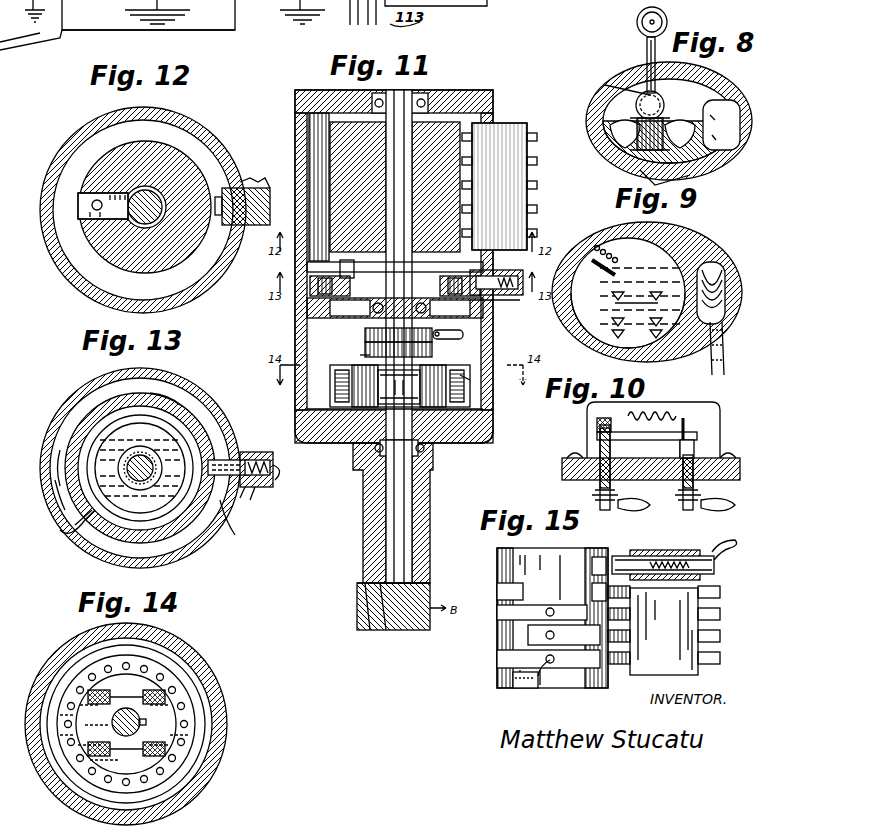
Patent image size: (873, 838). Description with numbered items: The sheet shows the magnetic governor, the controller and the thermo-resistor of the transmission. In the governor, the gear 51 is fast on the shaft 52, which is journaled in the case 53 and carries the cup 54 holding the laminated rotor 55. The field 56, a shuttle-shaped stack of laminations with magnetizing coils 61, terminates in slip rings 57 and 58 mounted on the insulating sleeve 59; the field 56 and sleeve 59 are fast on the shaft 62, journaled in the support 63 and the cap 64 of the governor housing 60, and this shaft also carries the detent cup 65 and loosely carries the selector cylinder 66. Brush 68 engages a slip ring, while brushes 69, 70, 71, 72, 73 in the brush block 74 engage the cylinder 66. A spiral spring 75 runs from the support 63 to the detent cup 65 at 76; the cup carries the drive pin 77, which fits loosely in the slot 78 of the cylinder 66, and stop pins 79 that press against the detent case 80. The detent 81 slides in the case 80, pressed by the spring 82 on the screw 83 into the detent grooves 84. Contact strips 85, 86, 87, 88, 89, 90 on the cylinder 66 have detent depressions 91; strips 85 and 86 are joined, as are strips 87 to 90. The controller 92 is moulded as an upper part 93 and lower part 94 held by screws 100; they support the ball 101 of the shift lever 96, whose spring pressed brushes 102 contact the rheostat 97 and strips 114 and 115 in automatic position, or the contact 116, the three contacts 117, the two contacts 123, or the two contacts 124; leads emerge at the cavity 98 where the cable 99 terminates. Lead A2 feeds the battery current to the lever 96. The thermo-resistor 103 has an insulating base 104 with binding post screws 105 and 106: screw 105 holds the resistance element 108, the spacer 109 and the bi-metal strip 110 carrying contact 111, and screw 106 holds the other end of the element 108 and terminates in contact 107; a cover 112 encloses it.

In FIG. 11, the gear 51 is at (360, 610).
In FIG. 11, the shaft 52 is at (400, 508).
In FIG. 12, the case 53 is at (75, 136).
In FIG. 13, the case 53 is at (50, 386).
In FIG. 14, the case 53 is at (222, 722).
In FIG. 11, the case 53 is at (487, 440).
In FIG. 14, the cup 54 is at (195, 683).
In FIG. 11, the cup 54 is at (490, 415).
In FIG. 14, the rotor 55 is at (172, 662).
In FIG. 11, the rotor 55 is at (480, 385).
In FIG. 14, the field 56 is at (118, 696).
In FIG. 11, the field 56 is at (350, 410).
In FIG. 11, the slip ring 57 is at (368, 334).
In FIG. 11, the slip ring 58 is at (372, 349).
In FIG. 11, the insulating sleeve 59 is at (362, 355).
In FIG. 11, the motor housing 60 is at (440, 90).
In FIG. 14, the magnetizing coils 61 is at (145, 762).
In FIG. 11, the magnetizing coils 61 is at (360, 405).
In FIG. 14, the shaft 62 is at (150, 716).
In FIG. 11, the shaft 62 is at (390, 170).
In FIG. 13, the support 63 is at (158, 455).
In FIG. 11, the support 63 is at (478, 316).
In FIG. 11, the cap 64 is at (312, 92).
In FIG. 13, the detent cup 65 is at (70, 430).
In FIG. 11, the detent cup 65 is at (312, 315).
In FIG. 12, the selector cylinder 66 is at (130, 262).
In FIG. 11, the selector cylinder 66 is at (320, 143).
In FIG. 15, the selector cylinder 66 is at (508, 566).
In FIG. 11, the brush 68 is at (460, 335).
In FIG. 15, the brush 69 is at (718, 562).
In FIG. 15, the brush 70 is at (720, 592).
In FIG. 15, the brush 71 is at (720, 614).
In FIG. 15, the brush 72 is at (720, 636).
In FIG. 15, the brush 73 is at (720, 658).
In FIG. 12, the brush block 74 is at (241, 209).
In FIG. 11, the brush block 74 is at (499, 186).
In FIG. 15, the brush block 74 is at (664, 631).
In FIG. 13, the spiral spring 75 is at (175, 410).
In FIG. 13, the spring fastening point 76 is at (80, 520).
In FIG. 12, the drive pin 77 is at (85, 210).
In FIG. 11, the drive pin 77 is at (340, 268).
In FIG. 12, the slot 78 is at (90, 200).
In FIG. 15, the slot 78 is at (520, 688).
In FIG. 13, the stop pins 79 is at (58, 495).
In FIG. 11, the stop pins 79 is at (320, 290).
In FIG. 13, the detent case 80 is at (248, 490).
In FIG. 11, the detent case 80 is at (508, 292).
In FIG. 13, the detent 81 is at (235, 460).
In FIG. 13, the spring 82 is at (261, 460).
In FIG. 13, the screw 83 is at (273, 487).
In FIG. 13, the detent grooves 84 is at (150, 393).
In FIG. 15, the contact strip 85 is at (596, 566).
In FIG. 15, the contact strip 86 is at (596, 590).
In FIG. 15, the contact strip 87 is at (505, 590).
In FIG. 15, the contact strip 88 is at (503, 613).
In FIG. 15, the contact strip 89 is at (532, 636).
In FIG. 12, the contact strip 90 is at (182, 150).
In FIG. 15, the contact strip 90 is at (503, 662).
In FIG. 15, the detent depressions 91 is at (558, 662).
In FIG. 8, the controller 92 is at (722, 80).
In FIG. 9, the controller 92 is at (715, 248).
In FIG. 8, the upper part 93 is at (625, 72).
In FIG. 8, the lower part 94 is at (590, 145).
In FIG. 9, the lower part 94 is at (700, 250).
In FIG. 8, the shift lever 96 is at (638, 25).
In FIG. 9, the rheostat 97 is at (618, 251).
In FIG. 8, the cavity 98 is at (725, 145).
In FIG. 9, the cavity 98 is at (724, 268).
In FIG. 9, the cable 99 is at (735, 355).
In FIG. 8, the screws 100 is at (615, 85).
In FIG. 8, the ball 101 is at (640, 105).
In FIG. 8, the spring pressed brushes 102 is at (690, 178).
In FIG. 10, the thermo-resistor 103 is at (653, 401).
In FIG. 10, the base 104 is at (565, 466).
In FIG. 10, the binding post screw 105 is at (598, 505).
In FIG. 10, the binding post screw 106 is at (700, 500).
In FIG. 10, the contact 107 is at (698, 452).
In FIG. 10, the resistance element 108 is at (686, 412).
In FIG. 10, the spacer 109 is at (597, 428).
In FIG. 10, the bi-metal strip 110 is at (647, 443).
In FIG. 10, the contact 111 is at (698, 440).
In FIG. 10, the cover 112 is at (716, 416).
In FIG. 9, the contact strip 114 is at (592, 258).
In FIG. 9, the contact strip 115 is at (594, 265).
In FIG. 9, the contact 116 is at (640, 296).
In FIG. 9, the contacts 117 is at (618, 305).
In FIG. 9, the contacts 123 is at (624, 304).
In FIG. 9, the contacts 124 is at (637, 339).
In FIG. 8, the lead A2 is at (700, 100).